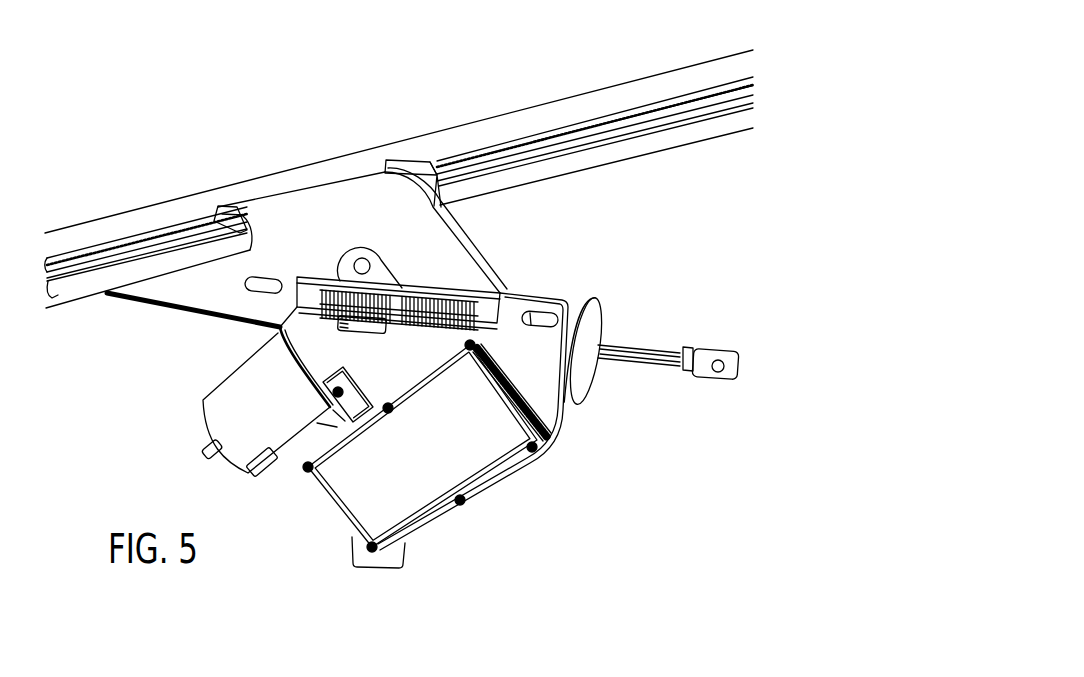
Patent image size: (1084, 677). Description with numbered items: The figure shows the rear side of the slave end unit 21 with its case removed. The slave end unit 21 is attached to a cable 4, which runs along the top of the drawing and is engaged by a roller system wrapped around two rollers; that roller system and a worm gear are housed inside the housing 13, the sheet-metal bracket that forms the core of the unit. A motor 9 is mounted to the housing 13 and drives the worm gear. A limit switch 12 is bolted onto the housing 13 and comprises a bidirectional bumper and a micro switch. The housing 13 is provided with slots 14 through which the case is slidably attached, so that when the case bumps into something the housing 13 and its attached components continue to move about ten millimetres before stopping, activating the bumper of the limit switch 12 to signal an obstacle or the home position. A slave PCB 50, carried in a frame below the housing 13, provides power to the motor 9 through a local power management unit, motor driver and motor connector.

The cable 4 is at (147, 301).
The motor 9 is at (233, 403).
The limit switch 12 is at (280, 332).
The housing 13 is at (547, 376).
The slots 14 is at (537, 317).
The slave end unit 21 is at (618, 251).
The slave PCB 50 is at (360, 488).